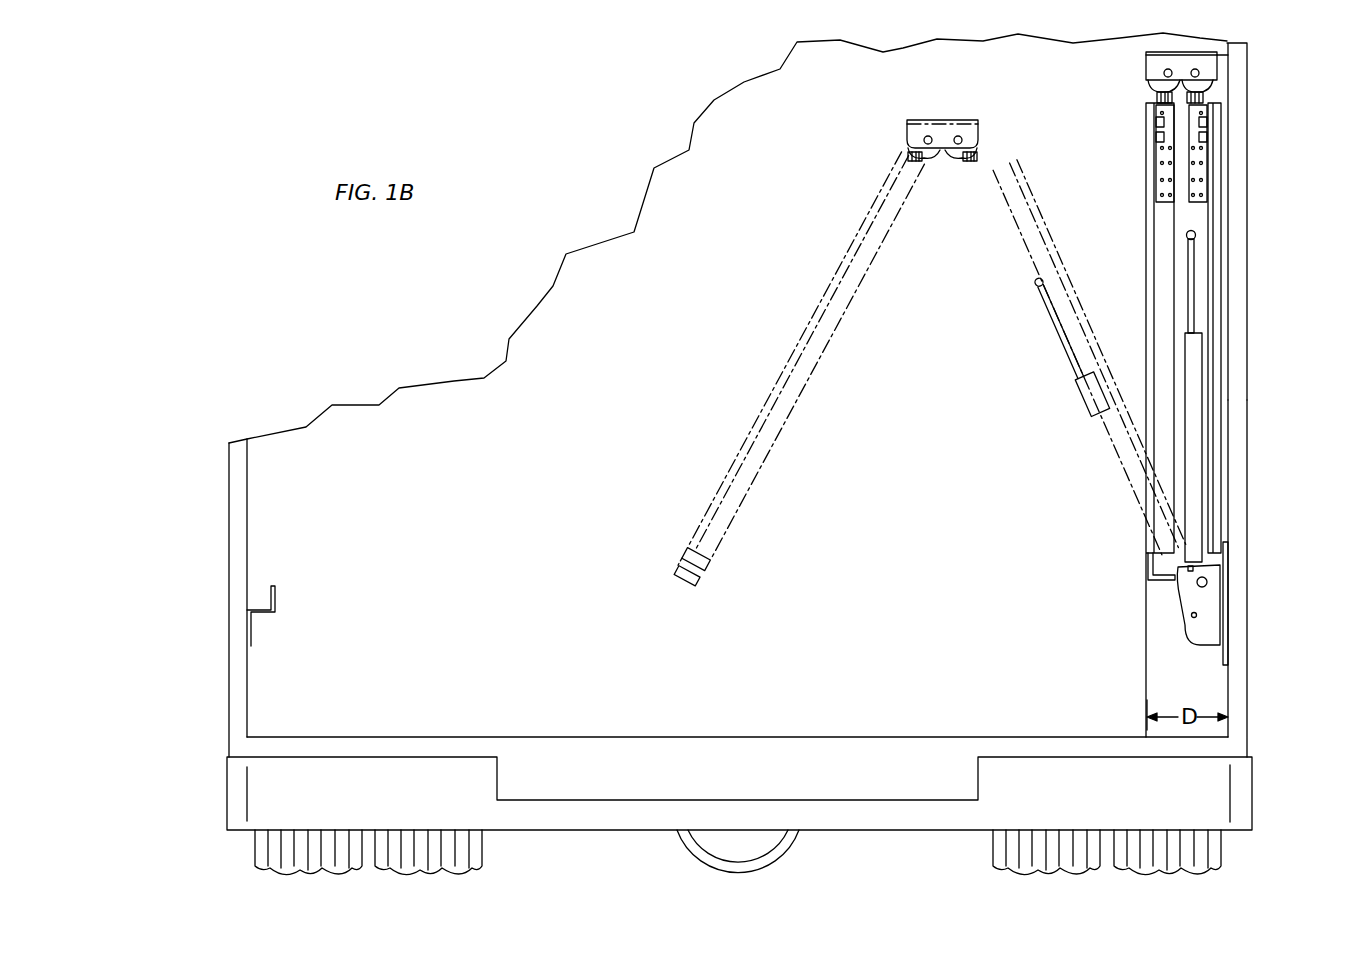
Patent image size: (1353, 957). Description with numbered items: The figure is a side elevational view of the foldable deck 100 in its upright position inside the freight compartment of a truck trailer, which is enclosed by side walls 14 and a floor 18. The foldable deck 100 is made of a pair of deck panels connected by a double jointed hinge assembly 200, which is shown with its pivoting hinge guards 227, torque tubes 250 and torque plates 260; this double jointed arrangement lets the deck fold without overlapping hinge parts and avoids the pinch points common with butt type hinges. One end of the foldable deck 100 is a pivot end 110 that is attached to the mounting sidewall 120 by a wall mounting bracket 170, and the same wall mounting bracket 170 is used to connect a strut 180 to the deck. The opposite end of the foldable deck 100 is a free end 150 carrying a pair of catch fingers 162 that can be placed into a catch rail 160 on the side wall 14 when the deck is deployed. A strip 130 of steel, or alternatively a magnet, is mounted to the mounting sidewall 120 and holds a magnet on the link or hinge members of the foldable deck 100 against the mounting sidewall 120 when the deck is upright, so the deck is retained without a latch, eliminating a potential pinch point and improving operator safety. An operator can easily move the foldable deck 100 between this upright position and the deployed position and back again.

The side walls 14 is at (229, 512).
The floor 18 is at (538, 737).
The foldable deck 100 is at (1142, 210).
The pivot end 110 is at (1214, 572).
The mounting sidewall 120 is at (1228, 694).
The strip 130 is at (1223, 88).
The free end 150 is at (708, 596).
The catch rail 160 is at (276, 602).
The catch fingers 162 is at (1152, 580).
The wall mounting bracket 170 is at (1215, 608).
The strut 180 is at (1093, 390).
The hinge assembly 200 is at (1130, 93).
The pivoting hinge guards 227 is at (1165, 84).
The torque tubes 250 is at (1156, 122).
The torque plates 260 is at (1172, 172).